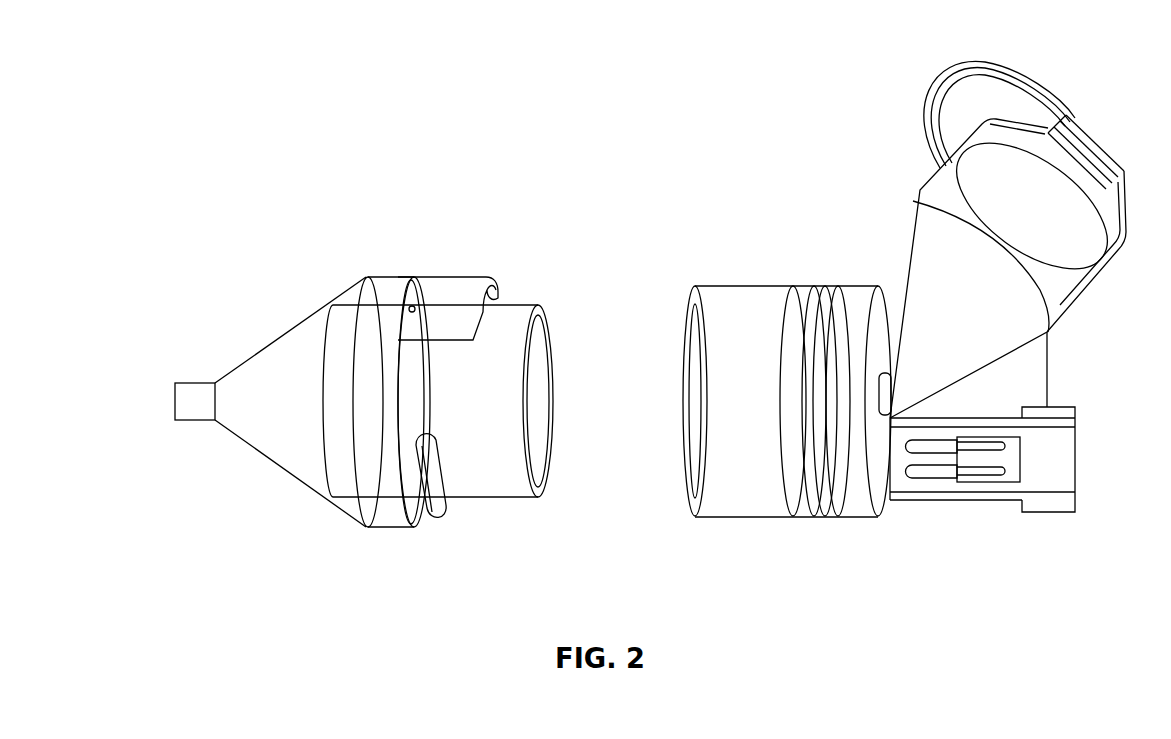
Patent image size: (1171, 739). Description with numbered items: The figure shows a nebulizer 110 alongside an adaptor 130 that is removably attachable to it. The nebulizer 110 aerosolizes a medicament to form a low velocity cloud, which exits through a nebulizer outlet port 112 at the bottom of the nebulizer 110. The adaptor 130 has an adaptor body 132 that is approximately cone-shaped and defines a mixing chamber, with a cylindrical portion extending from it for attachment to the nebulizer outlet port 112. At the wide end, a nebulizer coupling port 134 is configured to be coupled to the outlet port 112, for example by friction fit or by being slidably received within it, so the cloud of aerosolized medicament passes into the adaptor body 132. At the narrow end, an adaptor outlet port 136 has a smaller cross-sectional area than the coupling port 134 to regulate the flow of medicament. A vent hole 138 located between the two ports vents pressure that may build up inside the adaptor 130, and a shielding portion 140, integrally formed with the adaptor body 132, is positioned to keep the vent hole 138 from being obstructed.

The nebulizer 110 is at (877, 263).
The nebulizer outlet port 112 is at (719, 284).
The adaptor 130 is at (264, 302).
The adaptor body 132 is at (257, 427).
The nebulizer coupling port 134 is at (505, 498).
The adaptor outlet port 136 is at (175, 402).
The vent hole 138 is at (407, 300).
The shielding portion 140 is at (440, 276).